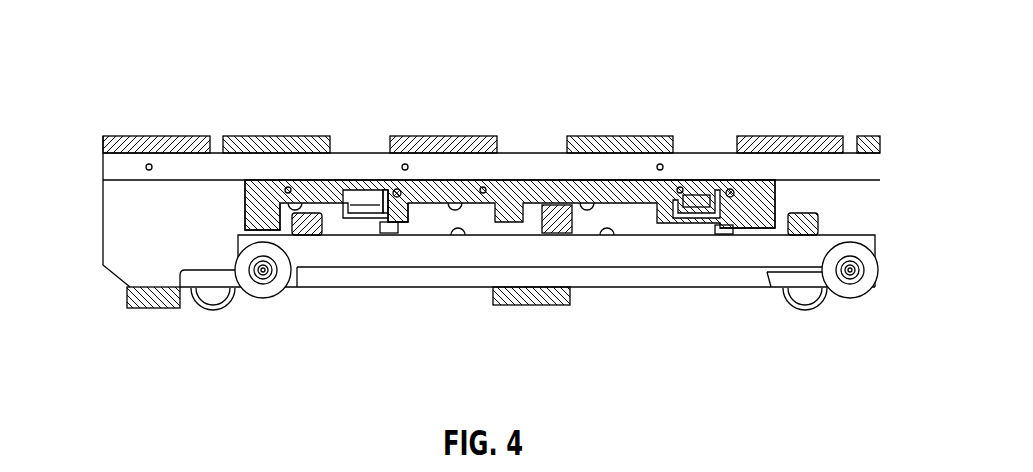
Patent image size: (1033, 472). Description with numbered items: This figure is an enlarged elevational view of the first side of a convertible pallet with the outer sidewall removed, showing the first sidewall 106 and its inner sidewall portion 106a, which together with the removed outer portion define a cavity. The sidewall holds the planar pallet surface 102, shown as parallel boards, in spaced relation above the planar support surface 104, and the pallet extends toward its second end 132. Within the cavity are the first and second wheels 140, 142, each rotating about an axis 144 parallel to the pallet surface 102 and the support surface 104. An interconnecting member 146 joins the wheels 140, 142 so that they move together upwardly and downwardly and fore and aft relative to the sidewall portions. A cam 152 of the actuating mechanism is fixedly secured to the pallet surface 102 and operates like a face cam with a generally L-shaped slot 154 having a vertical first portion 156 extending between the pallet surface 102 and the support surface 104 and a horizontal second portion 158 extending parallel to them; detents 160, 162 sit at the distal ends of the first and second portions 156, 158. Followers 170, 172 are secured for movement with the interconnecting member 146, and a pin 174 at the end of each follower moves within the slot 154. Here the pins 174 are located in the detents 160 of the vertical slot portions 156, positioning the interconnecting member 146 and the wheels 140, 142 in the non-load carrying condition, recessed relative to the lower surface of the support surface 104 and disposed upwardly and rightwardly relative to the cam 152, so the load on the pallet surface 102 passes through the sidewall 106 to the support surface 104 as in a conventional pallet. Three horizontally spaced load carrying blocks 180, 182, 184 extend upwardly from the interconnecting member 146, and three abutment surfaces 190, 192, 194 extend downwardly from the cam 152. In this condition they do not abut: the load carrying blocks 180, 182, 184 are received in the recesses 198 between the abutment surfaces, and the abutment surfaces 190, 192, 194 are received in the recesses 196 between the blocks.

The pallet surface 102 is at (498, 146).
The support surface 104 is at (518, 306).
The first sidewall 106 is at (133, 238).
The inner sidewall portion 106a is at (115, 222).
The second end 132 is at (103, 145).
The first wheel 140 is at (215, 300).
The second wheel 142 is at (800, 300).
The axis 144 is at (263, 270).
The interconnecting member 146 is at (655, 272).
The cam 152 is at (645, 175).
The slot 154 is at (410, 228).
The first portion 156 is at (348, 207).
The second portion 158 is at (385, 235).
The detent 160 is at (384, 190).
The detent 162 is at (372, 192).
The follower 170 is at (440, 233).
The follower 172 is at (700, 220).
The pin 174 is at (399, 190).
The load carrying block 180 is at (310, 237).
The load carrying block 182 is at (560, 233).
The load carrying block 184 is at (803, 212).
The abutment surface 190 is at (240, 208).
The abutment surface 192 is at (545, 250).
The abutment surface 194 is at (728, 235).
The recess 196 is at (458, 237).
The recess 198 is at (290, 200).